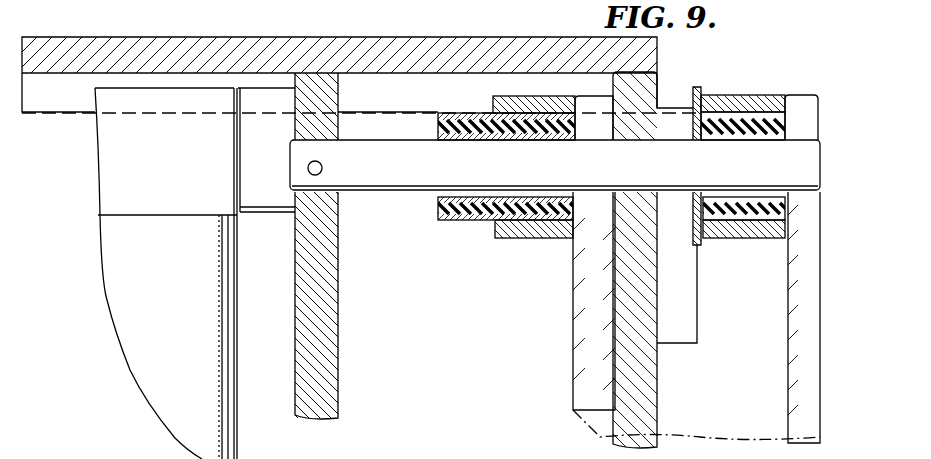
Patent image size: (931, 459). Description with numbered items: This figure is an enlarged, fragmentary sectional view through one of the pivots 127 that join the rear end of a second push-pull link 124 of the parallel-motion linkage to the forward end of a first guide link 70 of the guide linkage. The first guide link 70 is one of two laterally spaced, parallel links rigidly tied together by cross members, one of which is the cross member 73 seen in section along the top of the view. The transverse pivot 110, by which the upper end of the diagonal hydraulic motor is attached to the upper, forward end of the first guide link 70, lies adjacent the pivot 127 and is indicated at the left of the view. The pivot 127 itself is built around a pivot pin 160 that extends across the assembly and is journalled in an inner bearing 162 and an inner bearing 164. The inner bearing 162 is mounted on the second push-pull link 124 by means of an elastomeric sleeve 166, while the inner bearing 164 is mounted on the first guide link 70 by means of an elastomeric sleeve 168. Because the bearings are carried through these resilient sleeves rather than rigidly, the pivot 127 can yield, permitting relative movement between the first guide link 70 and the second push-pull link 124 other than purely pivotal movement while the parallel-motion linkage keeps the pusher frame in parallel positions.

The cross member 73 is at (92, 53).
The transverse pivot 110 is at (247, 222).
The first guide link 70 is at (664, 76).
The second push-pull link 124 is at (805, 321).
The transverse pivot 127 is at (824, 141).
The pivot pin 160 is at (798, 170).
The inner bearing 162 is at (742, 132).
The inner bearing 164 is at (453, 218).
The elastomeric sleeve 166 is at (735, 215).
The elastomeric sleeve 168 is at (527, 212).